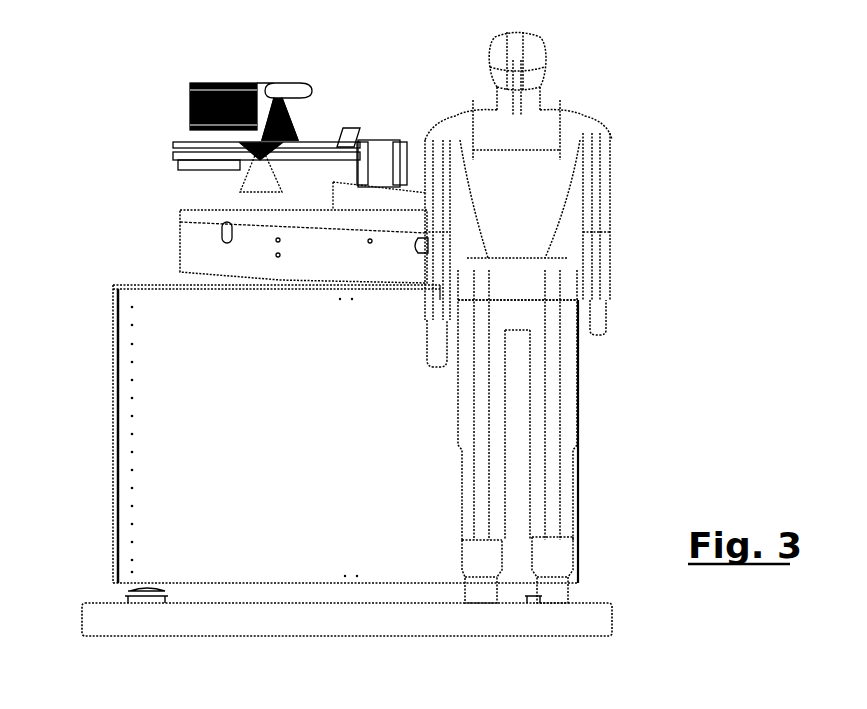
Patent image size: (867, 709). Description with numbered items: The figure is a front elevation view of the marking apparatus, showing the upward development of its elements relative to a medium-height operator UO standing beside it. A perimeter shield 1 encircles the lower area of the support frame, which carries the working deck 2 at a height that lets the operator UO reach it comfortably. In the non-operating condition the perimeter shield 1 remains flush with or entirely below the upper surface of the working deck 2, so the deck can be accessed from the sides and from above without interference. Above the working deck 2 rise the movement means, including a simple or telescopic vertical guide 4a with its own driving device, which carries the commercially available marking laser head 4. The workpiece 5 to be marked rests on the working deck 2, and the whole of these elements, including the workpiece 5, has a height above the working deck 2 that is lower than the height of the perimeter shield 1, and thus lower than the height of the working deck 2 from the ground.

The perimeter shield 1 is at (112, 438).
The working deck 2 is at (135, 286).
The marking laser head 4 is at (216, 92).
The vertical guide 4a is at (383, 160).
The workpiece 5 is at (192, 242).
The operator UO is at (582, 110).